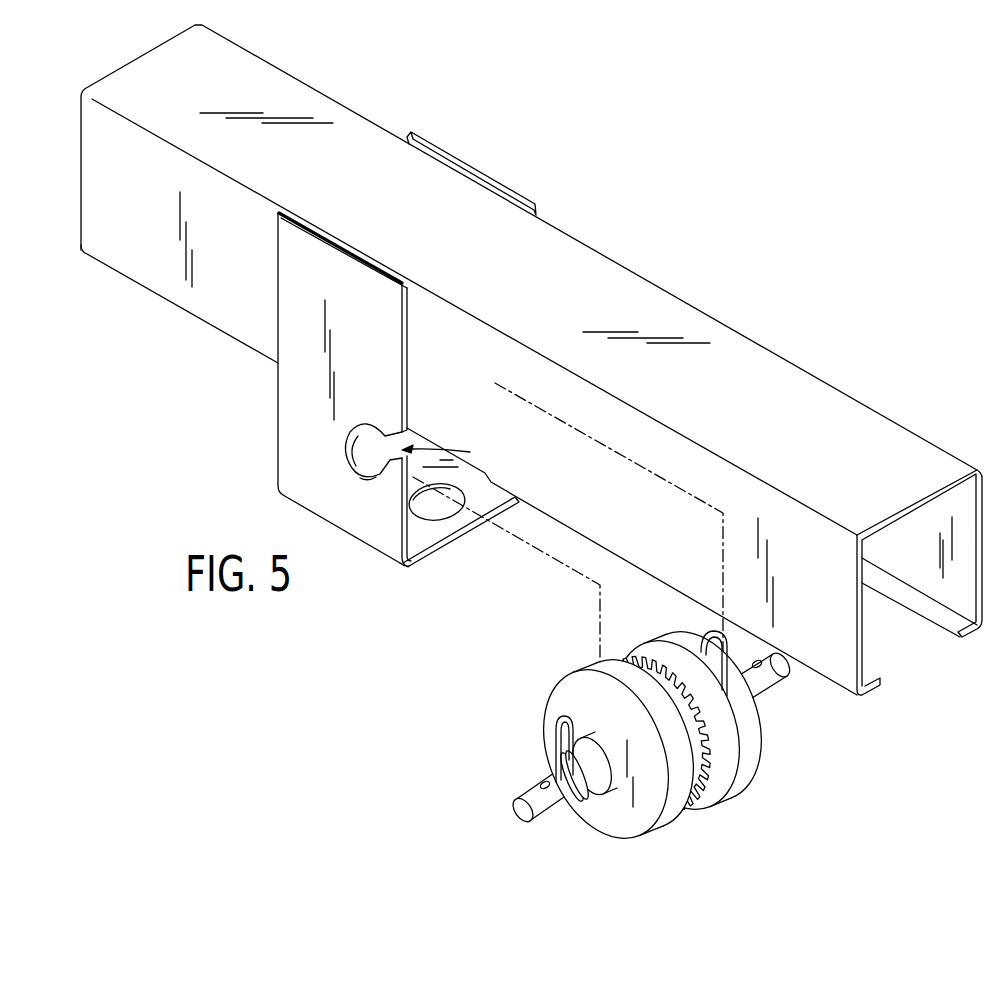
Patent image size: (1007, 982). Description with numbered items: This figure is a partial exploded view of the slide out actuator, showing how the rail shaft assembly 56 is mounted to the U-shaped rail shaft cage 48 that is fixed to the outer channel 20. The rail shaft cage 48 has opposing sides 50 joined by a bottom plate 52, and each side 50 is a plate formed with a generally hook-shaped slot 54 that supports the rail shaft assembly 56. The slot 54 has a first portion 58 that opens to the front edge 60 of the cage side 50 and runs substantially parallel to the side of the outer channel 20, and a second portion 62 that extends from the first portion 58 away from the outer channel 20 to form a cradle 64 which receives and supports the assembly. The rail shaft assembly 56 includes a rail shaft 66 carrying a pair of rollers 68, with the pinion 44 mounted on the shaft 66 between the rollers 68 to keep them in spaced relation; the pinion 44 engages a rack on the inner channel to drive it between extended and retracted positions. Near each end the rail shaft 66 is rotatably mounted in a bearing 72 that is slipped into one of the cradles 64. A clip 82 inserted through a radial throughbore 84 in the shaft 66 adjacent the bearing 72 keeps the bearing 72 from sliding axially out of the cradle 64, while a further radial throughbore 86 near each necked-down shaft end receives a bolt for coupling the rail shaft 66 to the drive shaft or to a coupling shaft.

The outer channel 20 is at (656, 284).
The pinion 44 is at (706, 734).
The rail shaft cage 48 is at (402, 567).
The side 50 is at (370, 413).
The bottom plate 52 is at (458, 540).
The slot 54 is at (450, 453).
The rail shaft assembly 56 is at (683, 715).
The first portion 58 is at (354, 449).
The front edge 60 is at (408, 403).
The second portion 62 is at (352, 456).
The cradle 64 is at (364, 477).
The rail shaft 66 is at (768, 682).
The roller 68 is at (746, 775).
The bearing 72 is at (598, 802).
The clip 82 is at (546, 720).
The radial throughbore 84 is at (568, 790).
The radial throughbore 86 is at (542, 784).